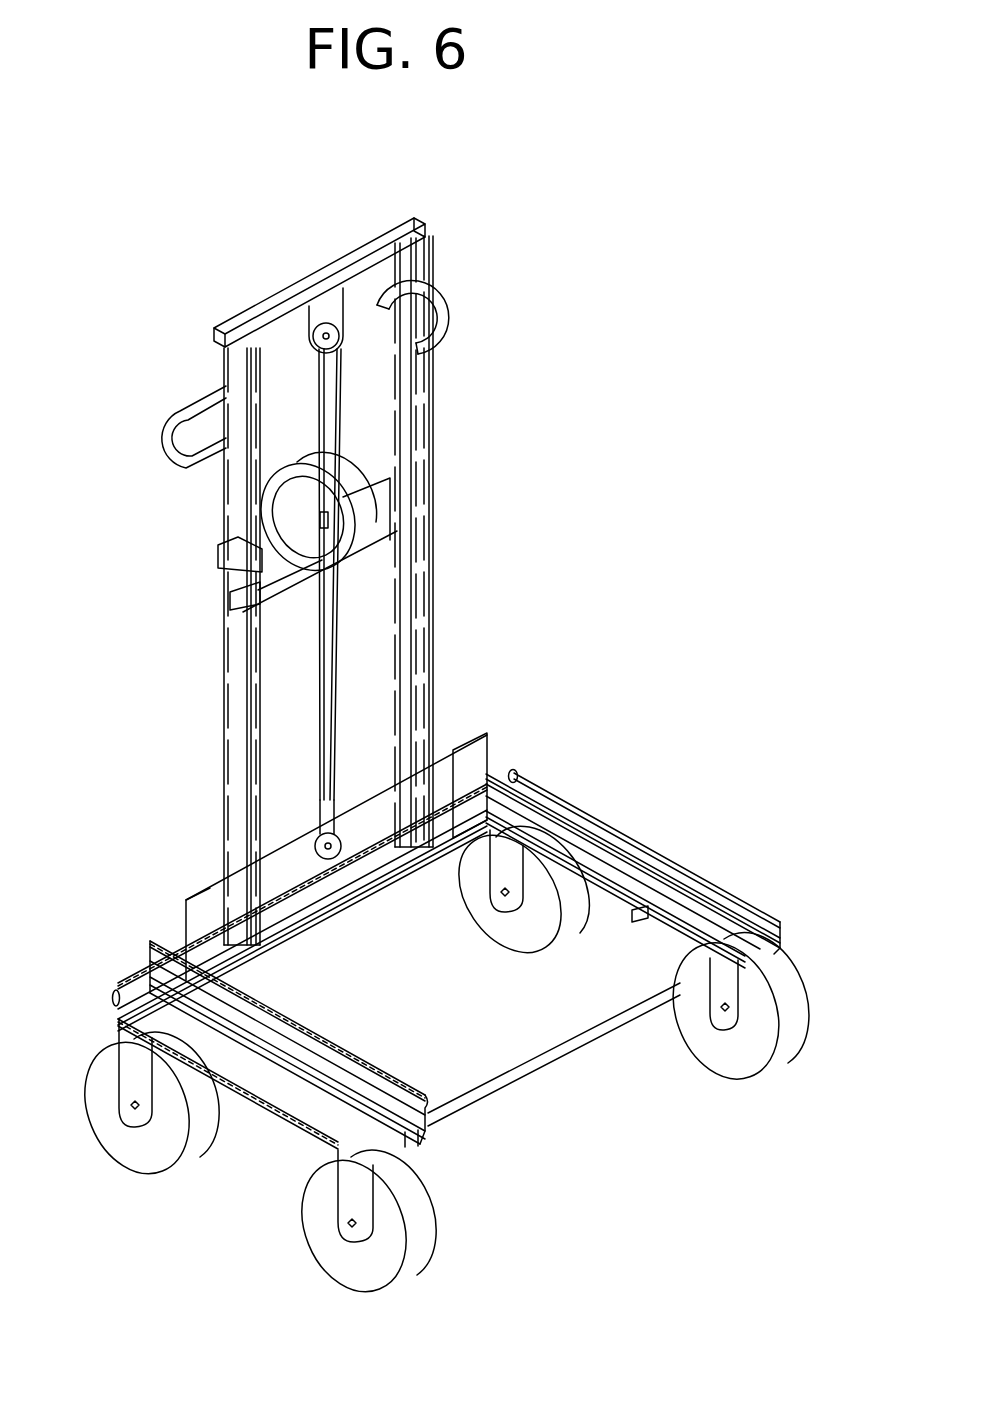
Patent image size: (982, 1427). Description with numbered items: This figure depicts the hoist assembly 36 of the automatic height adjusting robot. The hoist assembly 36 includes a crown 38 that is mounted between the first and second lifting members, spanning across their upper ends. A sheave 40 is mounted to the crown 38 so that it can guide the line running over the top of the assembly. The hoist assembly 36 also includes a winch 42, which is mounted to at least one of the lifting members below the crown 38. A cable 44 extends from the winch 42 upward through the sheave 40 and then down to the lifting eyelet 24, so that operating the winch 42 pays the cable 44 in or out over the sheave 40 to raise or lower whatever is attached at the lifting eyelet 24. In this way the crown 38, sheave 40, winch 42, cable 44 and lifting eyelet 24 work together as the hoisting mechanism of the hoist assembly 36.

The lifting eyelet 24 is at (320, 847).
The hoist assembly 36 is at (235, 290).
The crown 38 is at (377, 253).
The sheave 40 is at (328, 337).
The winch 42 is at (360, 535).
The cable 44 is at (325, 687).